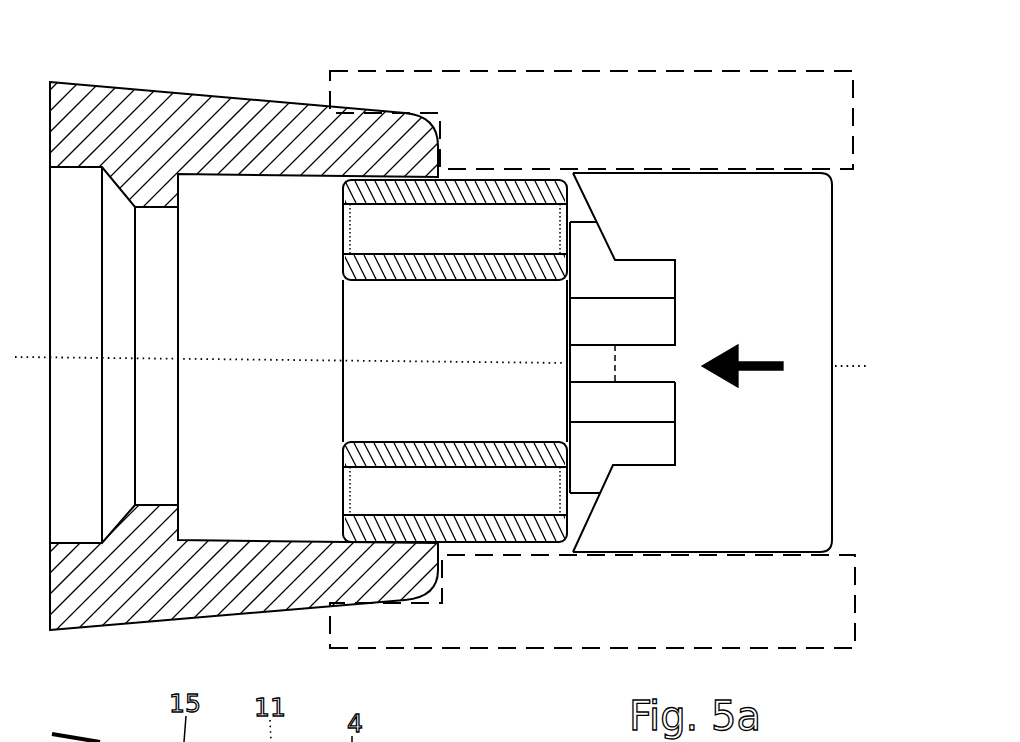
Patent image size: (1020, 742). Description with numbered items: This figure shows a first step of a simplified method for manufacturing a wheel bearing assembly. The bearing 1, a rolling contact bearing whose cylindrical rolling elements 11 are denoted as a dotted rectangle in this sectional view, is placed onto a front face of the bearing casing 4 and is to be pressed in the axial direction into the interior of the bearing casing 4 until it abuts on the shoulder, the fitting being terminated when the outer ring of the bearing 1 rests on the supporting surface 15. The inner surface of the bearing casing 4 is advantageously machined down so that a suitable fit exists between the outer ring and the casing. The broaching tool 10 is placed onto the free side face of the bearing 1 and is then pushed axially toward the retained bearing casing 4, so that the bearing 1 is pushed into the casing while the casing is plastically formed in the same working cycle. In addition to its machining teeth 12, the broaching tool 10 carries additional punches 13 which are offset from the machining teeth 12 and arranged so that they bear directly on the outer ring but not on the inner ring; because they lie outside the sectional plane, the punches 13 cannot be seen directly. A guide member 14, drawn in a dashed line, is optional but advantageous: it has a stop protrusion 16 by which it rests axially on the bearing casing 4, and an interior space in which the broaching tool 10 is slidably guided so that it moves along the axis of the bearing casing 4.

The bearing 1 is at (487, 188).
The bearing casing 4 is at (276, 120).
The broaching tool 10 is at (743, 213).
The rolling elements 11 is at (343, 490).
The machining teeth 12 is at (583, 181).
The punches 13 is at (583, 488).
The guide member 14 is at (688, 78).
The supporting surface 15 is at (188, 197).
The stop protrusion 16 is at (455, 577).